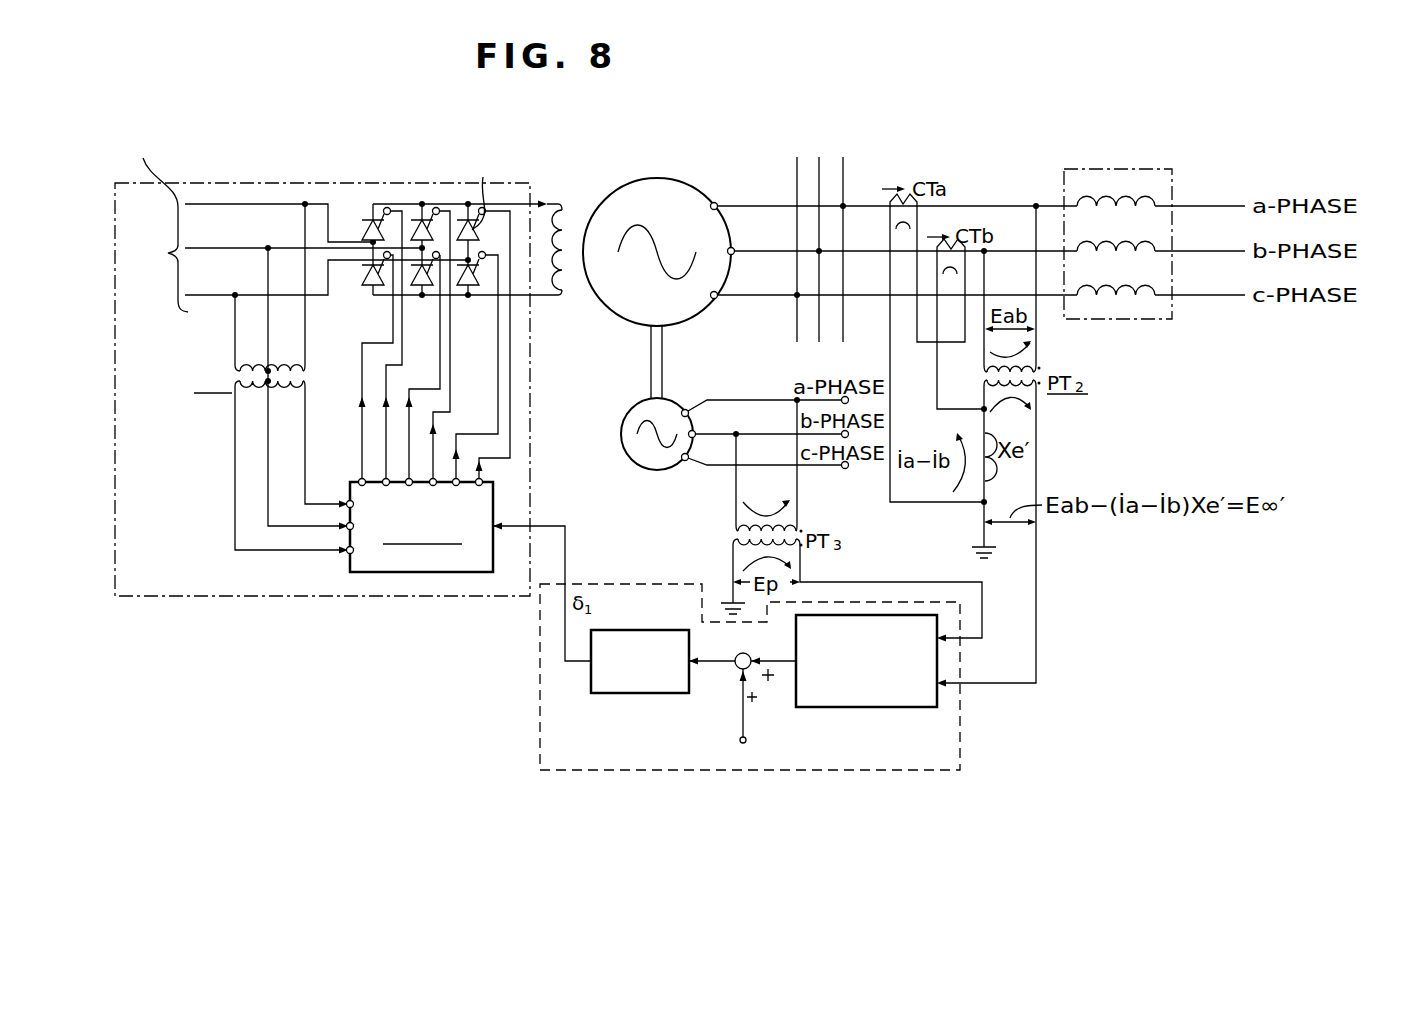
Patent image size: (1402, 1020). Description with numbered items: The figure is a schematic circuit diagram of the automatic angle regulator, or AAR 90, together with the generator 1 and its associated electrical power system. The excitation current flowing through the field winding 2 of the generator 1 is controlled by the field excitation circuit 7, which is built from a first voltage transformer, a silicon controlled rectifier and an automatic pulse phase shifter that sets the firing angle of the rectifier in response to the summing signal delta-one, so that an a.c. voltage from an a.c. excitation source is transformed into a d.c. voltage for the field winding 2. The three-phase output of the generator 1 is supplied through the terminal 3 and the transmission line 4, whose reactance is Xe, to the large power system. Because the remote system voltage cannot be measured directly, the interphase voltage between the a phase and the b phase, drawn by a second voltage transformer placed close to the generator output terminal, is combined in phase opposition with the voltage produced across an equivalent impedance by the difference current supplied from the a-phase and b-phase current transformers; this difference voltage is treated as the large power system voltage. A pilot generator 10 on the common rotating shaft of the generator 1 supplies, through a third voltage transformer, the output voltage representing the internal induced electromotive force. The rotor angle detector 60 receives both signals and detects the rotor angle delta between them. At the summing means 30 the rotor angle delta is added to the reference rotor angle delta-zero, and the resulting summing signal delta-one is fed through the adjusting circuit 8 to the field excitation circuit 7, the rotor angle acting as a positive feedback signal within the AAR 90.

The generator 1 is at (710, 203).
The field winding 2 is at (567, 207).
The terminal 3 is at (843, 165).
The transmission line 4 is at (1153, 169).
The field excitation circuit 7 is at (412, 183).
The adjusting circuit 8 is at (662, 630).
The pilot generator 10 is at (686, 410).
The summing means 30 is at (743, 653).
The rotor angle detector 60 is at (898, 707).
The AAR 90 is at (960, 717).